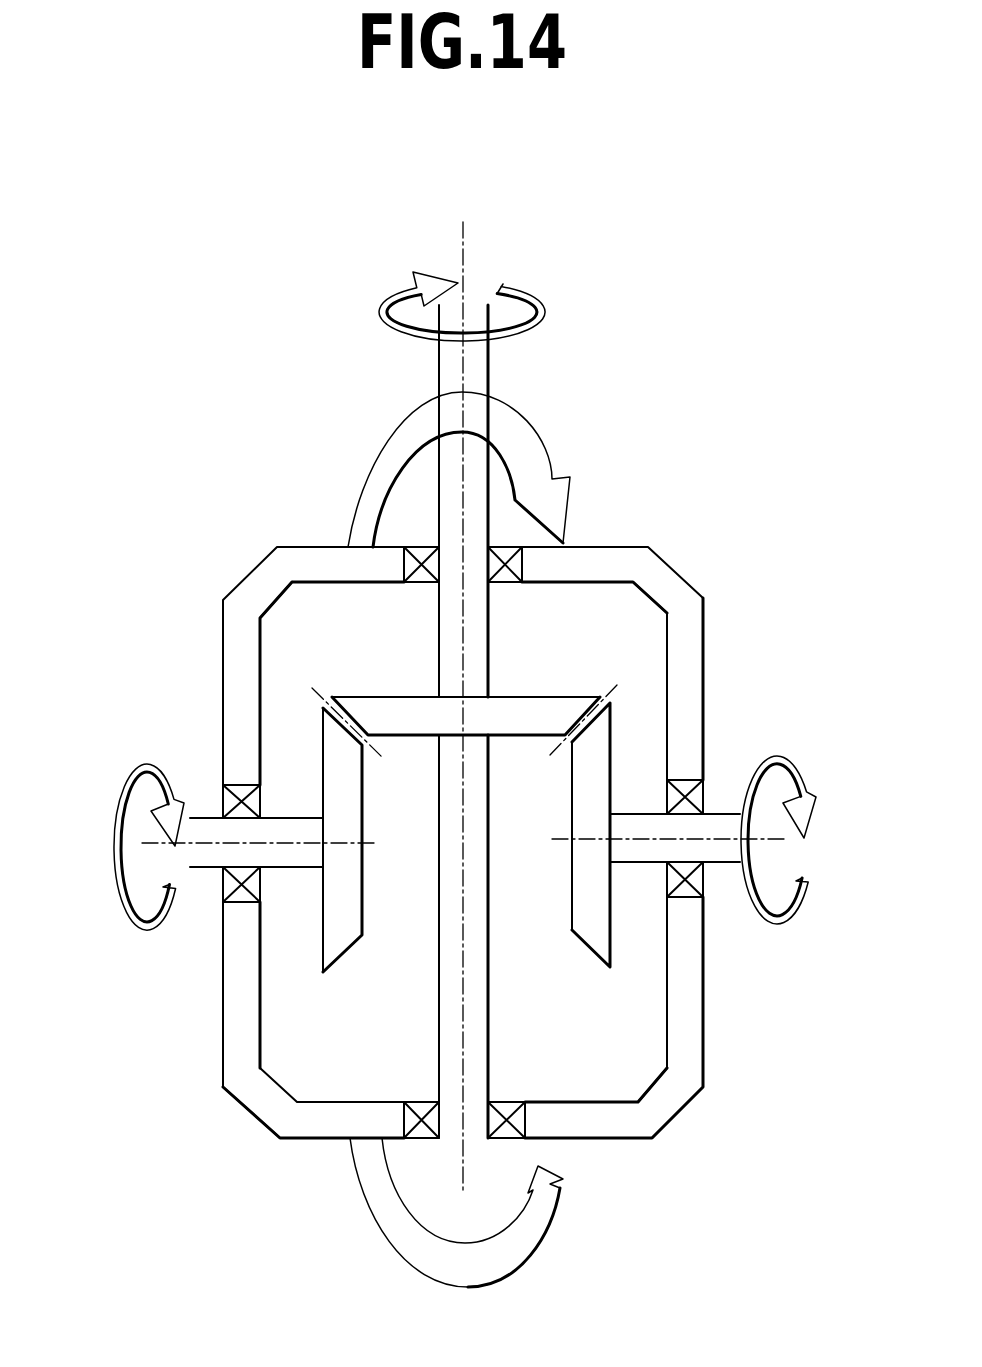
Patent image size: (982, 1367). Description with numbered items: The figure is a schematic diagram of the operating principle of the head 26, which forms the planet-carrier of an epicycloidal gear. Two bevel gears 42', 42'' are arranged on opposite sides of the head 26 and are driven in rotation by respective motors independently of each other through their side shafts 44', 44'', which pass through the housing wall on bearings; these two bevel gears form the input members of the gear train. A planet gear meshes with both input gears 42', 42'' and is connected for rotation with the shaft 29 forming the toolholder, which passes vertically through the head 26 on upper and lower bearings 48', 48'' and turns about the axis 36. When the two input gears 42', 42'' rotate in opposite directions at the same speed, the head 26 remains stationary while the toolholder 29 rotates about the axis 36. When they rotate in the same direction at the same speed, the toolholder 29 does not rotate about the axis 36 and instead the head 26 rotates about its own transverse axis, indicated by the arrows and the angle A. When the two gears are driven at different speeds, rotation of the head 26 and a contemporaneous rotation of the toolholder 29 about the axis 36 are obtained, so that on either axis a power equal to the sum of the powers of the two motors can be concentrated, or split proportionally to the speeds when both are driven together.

The head 26 is at (670, 562).
The shaft 29 is at (437, 372).
The axis 36 is at (465, 243).
The right gear 42' is at (668, 821).
The left gear 42'' is at (265, 824).
The right side shaft 44' is at (709, 817).
The left side shaft 44'' is at (221, 822).
The upper bearings 48' is at (497, 602).
The lower bearings 48'' is at (520, 1141).
The angle A is at (728, 840).